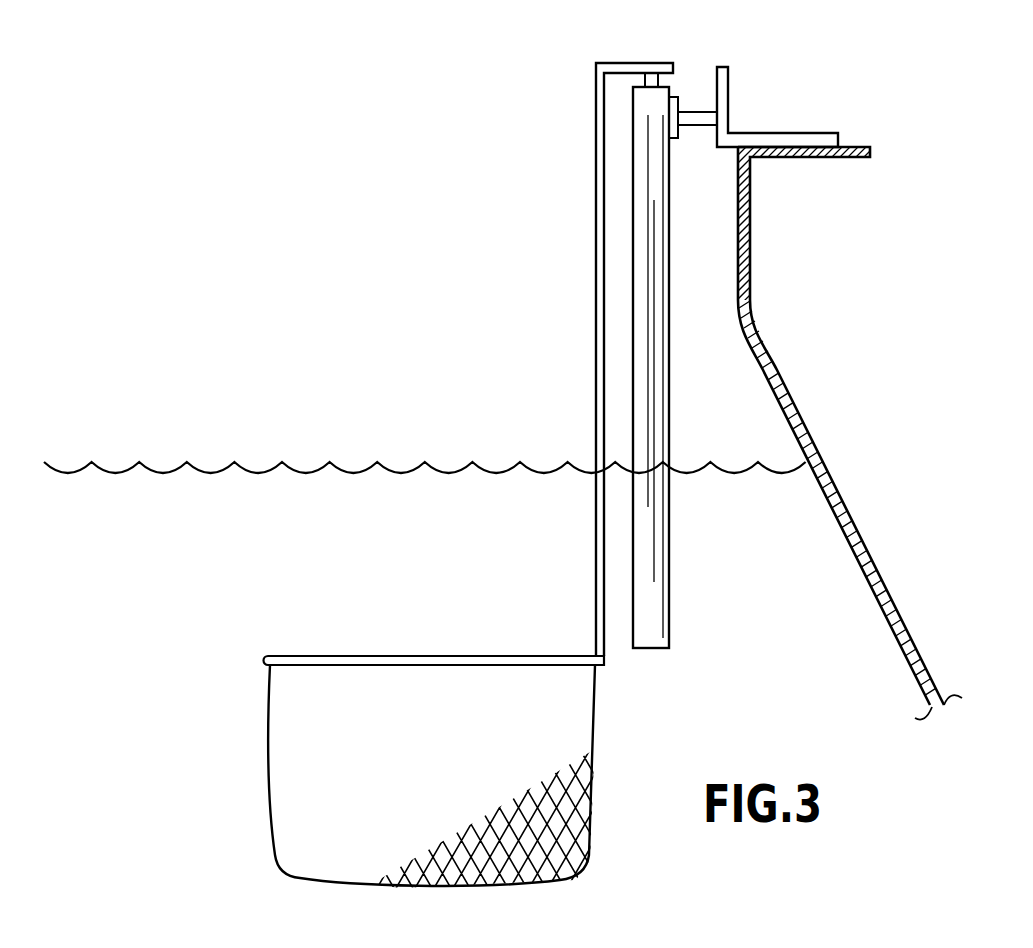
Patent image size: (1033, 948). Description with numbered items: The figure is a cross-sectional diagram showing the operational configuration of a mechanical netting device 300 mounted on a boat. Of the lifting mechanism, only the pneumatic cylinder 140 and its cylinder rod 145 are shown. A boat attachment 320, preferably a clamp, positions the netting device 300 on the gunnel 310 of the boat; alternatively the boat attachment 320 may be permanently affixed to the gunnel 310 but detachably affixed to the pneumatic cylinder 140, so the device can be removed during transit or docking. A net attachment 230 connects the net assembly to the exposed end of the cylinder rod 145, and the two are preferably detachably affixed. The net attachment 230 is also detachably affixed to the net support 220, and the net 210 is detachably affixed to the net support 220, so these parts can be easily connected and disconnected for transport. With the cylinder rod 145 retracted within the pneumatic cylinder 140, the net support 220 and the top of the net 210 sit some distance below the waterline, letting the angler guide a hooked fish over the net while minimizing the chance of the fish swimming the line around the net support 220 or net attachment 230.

The mechanical netting device 300 is at (398, 193).
The pneumatic cylinder 140 is at (669, 562).
The cylinder rod 145 is at (652, 63).
The net attachment 230 is at (596, 337).
The net support 220 is at (406, 656).
The net 210 is at (270, 832).
The gunnel 310 is at (750, 258).
The boat attachment 320 is at (728, 78).